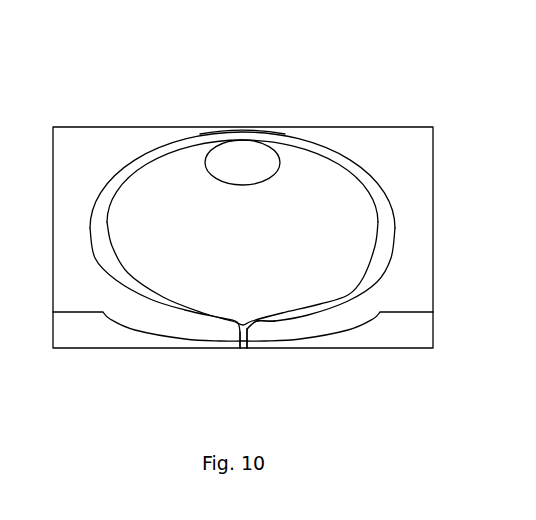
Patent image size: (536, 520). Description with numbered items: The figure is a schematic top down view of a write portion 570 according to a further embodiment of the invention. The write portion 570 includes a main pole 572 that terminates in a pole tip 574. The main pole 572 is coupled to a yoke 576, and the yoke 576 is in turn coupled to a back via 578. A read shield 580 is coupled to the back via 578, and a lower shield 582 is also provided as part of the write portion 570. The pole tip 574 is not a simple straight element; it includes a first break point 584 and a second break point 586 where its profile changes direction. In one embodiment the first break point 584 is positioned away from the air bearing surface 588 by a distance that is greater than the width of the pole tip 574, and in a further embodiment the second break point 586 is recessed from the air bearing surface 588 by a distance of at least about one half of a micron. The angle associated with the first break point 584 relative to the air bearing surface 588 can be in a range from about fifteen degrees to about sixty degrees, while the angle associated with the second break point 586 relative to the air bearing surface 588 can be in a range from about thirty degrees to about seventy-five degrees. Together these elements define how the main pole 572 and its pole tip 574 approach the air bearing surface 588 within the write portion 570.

The write portion 570 is at (175, 112).
The main pole 572 is at (322, 157).
The pole tip 574 is at (243, 349).
The yoke 576 is at (137, 160).
The back via 578 is at (242, 140).
The read shield 580 is at (215, 128).
The lower shield 582 is at (298, 349).
The first break point 584 is at (250, 341).
The second break point 586 is at (258, 320).
The air bearing surface 588 is at (148, 349).